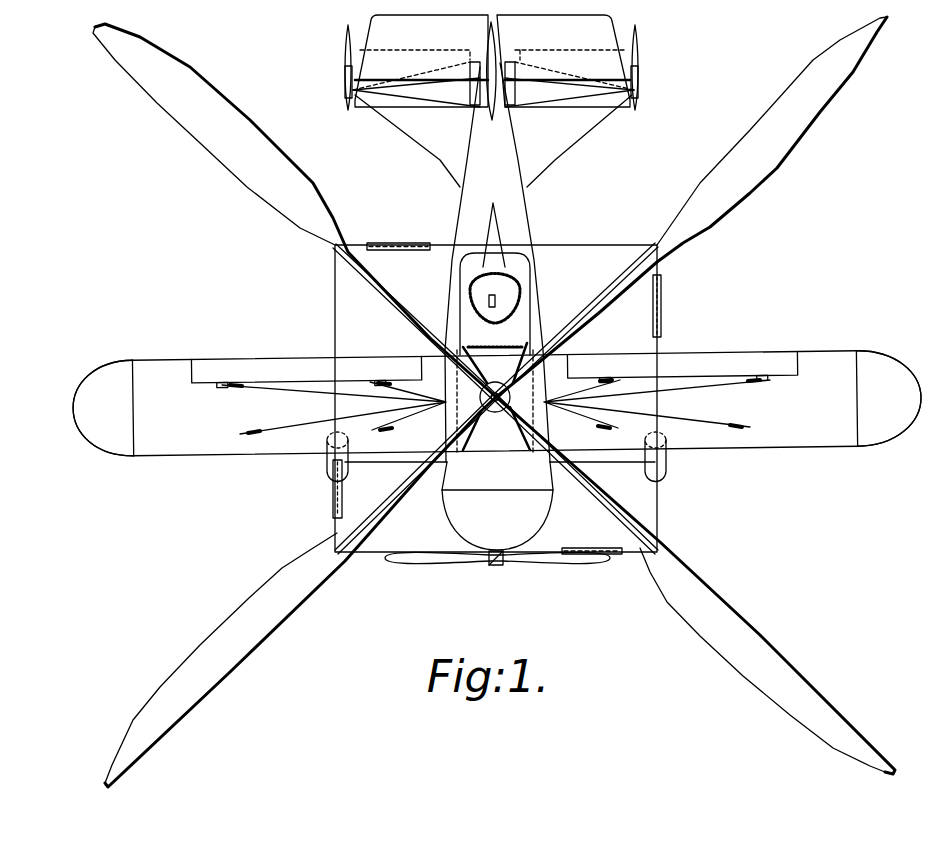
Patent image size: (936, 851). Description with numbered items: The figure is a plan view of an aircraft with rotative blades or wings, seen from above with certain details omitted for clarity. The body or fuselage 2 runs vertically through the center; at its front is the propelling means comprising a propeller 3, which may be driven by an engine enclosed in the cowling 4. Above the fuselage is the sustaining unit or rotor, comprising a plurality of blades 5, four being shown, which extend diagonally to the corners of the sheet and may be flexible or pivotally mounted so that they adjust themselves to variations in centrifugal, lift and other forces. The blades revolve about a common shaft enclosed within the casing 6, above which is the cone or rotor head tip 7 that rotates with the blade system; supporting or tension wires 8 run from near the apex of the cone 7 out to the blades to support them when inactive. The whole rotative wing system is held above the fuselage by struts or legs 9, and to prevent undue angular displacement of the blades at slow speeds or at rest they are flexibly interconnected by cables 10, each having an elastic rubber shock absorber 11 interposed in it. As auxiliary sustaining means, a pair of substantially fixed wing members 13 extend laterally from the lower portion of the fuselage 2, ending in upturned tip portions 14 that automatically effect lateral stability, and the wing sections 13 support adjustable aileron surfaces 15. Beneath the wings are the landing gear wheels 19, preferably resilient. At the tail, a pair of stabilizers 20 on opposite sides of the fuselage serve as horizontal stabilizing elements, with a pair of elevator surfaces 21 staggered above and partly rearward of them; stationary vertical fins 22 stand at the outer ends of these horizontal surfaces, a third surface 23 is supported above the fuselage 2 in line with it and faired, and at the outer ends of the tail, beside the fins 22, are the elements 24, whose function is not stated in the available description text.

The fuselage 2 is at (520, 222).
The propeller 3 is at (548, 560).
The cowling 4 is at (535, 518).
The rotative blades 5 is at (165, 103).
The casing 6 is at (495, 412).
The rotor head cone 7 is at (495, 392).
The supporting wires 8 is at (605, 288).
The struts 9 is at (527, 345).
The interconnecting cables 10 is at (335, 324).
The rubber shock absorber 11 is at (333, 498).
The fixed wing members 13 is at (190, 442).
The upturned tip portions 14 is at (73, 413).
The aileron surfaces 15 is at (225, 365).
The wheels 19 is at (327, 462).
The stabilizers 20 is at (393, 105).
The elevator surfaces 21 is at (492, 61).
The vertical fins 22 is at (345, 88).
The third tail surface 23 is at (487, 118).
The tail propeller 24 is at (345, 42).